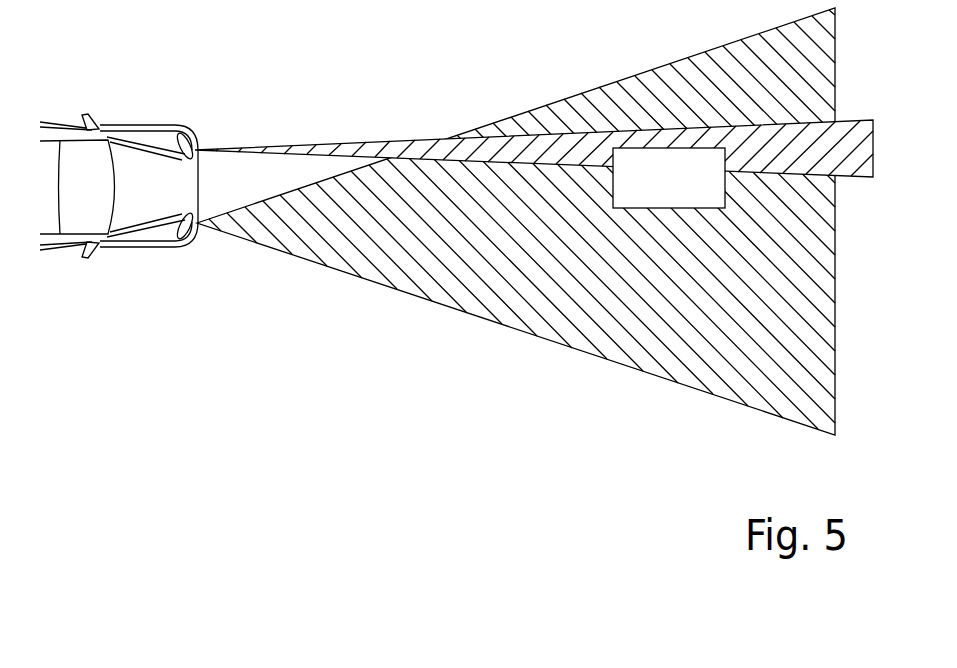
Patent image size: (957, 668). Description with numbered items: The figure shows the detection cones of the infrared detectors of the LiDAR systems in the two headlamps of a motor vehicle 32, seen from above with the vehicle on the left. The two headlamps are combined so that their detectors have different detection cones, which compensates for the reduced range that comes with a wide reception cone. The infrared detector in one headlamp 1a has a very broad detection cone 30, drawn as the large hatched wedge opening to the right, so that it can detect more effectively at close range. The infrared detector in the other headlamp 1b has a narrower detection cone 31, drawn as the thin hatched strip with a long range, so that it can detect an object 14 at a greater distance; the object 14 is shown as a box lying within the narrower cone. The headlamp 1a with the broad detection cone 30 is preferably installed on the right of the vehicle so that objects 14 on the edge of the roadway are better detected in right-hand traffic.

The headlamp 1a is at (186, 240).
The headlamp 1b is at (197, 139).
The object 14 is at (684, 191).
The broad detection cone 30 is at (663, 353).
The narrower detection cone 31 is at (465, 145).
The motor vehicle 32 is at (143, 168).